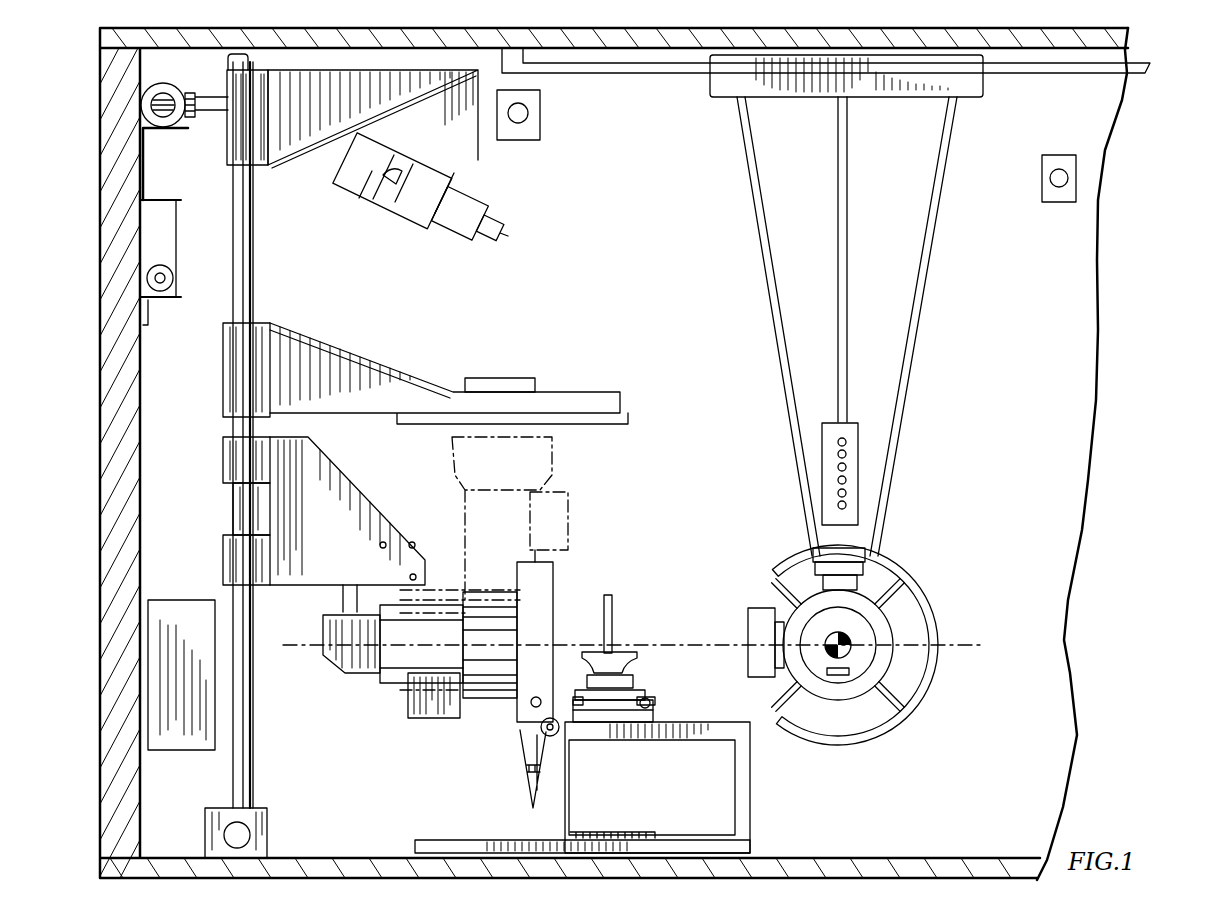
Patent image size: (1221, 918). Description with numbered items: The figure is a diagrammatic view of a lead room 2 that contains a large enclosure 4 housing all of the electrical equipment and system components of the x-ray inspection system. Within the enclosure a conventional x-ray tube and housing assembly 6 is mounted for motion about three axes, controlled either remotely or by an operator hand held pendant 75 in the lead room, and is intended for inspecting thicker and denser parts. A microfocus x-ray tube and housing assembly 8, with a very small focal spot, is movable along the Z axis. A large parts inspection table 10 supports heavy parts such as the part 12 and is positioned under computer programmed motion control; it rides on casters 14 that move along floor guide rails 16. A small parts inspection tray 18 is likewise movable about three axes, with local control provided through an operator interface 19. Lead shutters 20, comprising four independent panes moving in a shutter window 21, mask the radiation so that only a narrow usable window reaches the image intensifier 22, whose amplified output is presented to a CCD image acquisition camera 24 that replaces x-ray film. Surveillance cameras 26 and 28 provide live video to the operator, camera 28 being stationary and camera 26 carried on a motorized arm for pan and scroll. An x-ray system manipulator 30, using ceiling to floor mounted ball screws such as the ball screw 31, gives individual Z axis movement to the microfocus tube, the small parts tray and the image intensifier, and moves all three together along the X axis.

The lead room 2 is at (88, 236).
The large enclosure 4 is at (694, 292).
The conventional x-ray tube and housing assembly 6 is at (932, 444).
The microfocus x-ray tube and housing assembly 8 is at (353, 181).
The large parts inspection table 10 is at (687, 722).
The large heavy part 12 is at (630, 652).
The caster 14 is at (445, 840).
The floor guide rails 16 is at (822, 858).
The small parts inspection tray 18 is at (315, 352).
The operator interface 19 is at (150, 606).
The lead shutters 20 is at (553, 602).
The shutter window 21 is at (546, 634).
The image intensifier 22 is at (408, 690).
The CCD image acquisition camera 24 is at (384, 592).
The surveillance camera 26 is at (1042, 180).
The surveillance camera 28 is at (540, 99).
The x-ray system manipulator 30 is at (262, 314).
The ball screw 31 is at (257, 790).
The operator hand held pendant 75 is at (850, 423).